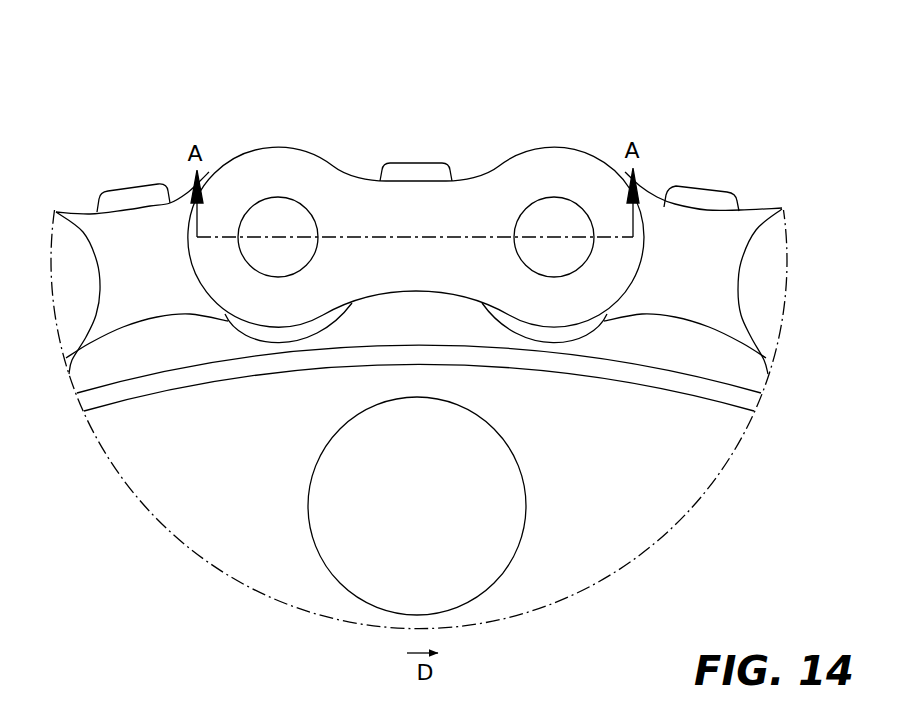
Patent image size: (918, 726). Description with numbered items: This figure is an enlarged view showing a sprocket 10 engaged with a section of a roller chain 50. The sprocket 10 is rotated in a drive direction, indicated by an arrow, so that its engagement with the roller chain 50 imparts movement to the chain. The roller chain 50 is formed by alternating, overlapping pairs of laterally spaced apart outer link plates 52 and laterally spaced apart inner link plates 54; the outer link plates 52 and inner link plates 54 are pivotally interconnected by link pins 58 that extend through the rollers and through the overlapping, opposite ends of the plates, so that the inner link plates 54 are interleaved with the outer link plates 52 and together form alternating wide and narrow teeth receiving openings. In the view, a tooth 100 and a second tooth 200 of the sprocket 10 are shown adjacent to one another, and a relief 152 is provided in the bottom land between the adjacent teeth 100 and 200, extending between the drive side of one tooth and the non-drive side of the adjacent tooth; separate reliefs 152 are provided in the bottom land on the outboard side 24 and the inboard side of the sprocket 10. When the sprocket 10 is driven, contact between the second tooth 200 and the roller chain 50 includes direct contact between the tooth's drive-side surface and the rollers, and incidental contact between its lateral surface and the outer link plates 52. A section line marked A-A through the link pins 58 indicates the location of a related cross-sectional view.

The sprocket 10 is at (242, 63).
The outboard side 24 is at (543, 115).
The roller chain 50 is at (225, 130).
The outer link plates 52 is at (423, 257).
The inner link plates 54 is at (150, 278).
The link pins 58 is at (272, 255).
The tooth 100 is at (120, 175).
The relief 152 is at (300, 338).
The second tooth 200 is at (413, 145).